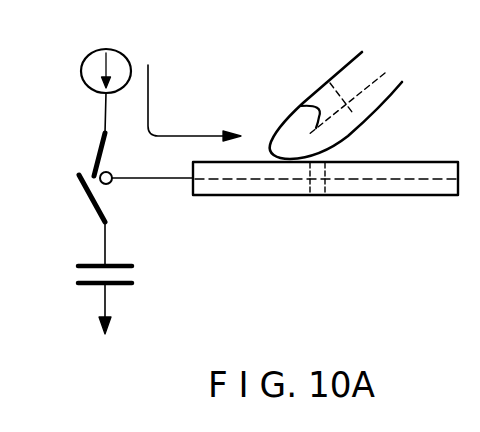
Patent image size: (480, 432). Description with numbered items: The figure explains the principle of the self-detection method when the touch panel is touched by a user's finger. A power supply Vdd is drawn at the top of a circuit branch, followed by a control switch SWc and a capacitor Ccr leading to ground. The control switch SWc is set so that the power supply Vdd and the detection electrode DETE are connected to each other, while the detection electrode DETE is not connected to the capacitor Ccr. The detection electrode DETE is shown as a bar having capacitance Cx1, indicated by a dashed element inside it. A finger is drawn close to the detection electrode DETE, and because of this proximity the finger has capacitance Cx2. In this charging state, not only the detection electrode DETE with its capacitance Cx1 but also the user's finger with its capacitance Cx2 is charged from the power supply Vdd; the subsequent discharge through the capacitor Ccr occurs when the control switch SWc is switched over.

The power supply Vdd is at (106, 58).
The control switch SWc is at (84, 171).
The capacitor Ccr is at (137, 273).
The detection electrode DETE is at (417, 162).
The capacitance of the detection electrode Cx1 is at (312, 197).
The capacitance of the user's finger Cx2 is at (331, 82).